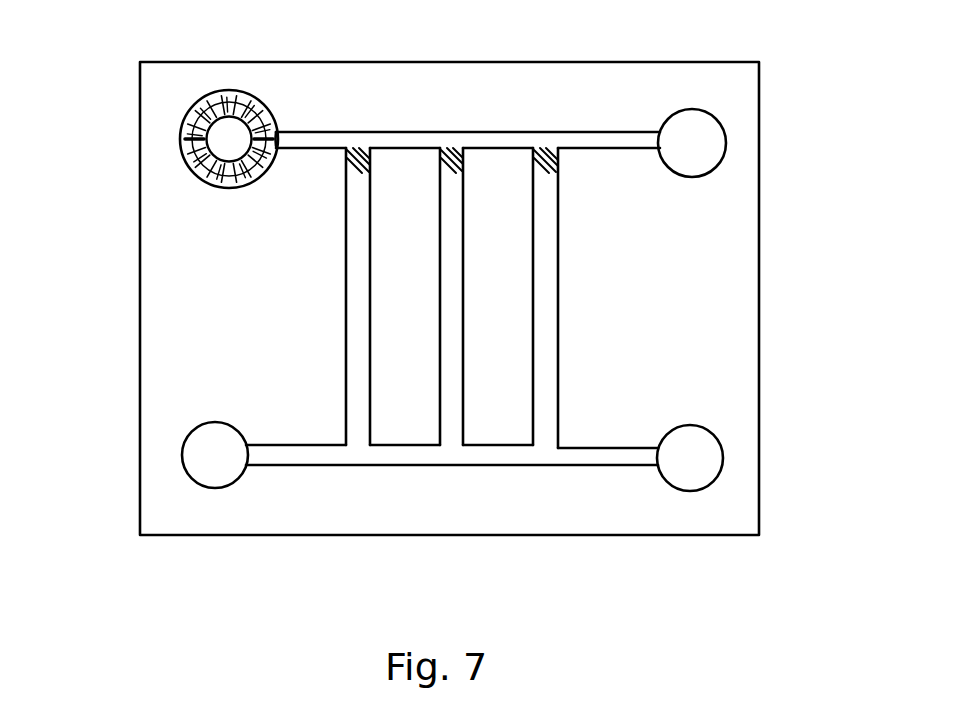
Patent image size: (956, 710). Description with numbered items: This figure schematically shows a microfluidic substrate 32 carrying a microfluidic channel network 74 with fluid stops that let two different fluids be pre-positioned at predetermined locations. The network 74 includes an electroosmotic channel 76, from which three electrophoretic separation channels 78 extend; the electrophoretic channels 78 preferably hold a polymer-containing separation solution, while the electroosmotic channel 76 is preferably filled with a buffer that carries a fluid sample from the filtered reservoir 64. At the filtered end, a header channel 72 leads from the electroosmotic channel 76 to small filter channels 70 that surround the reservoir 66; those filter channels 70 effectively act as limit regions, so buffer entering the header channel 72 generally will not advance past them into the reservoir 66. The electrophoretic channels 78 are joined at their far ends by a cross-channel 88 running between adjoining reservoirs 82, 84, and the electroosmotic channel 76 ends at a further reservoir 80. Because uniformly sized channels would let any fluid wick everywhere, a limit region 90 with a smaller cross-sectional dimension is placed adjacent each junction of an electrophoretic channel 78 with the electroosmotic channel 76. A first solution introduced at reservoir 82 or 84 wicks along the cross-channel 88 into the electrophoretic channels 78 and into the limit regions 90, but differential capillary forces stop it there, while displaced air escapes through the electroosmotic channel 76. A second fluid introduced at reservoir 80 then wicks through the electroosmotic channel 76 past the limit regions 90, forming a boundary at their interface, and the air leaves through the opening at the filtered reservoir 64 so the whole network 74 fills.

The substrate / chip body 32 is at (696, 70).
The filtered reservoir 64 is at (181, 135).
The reservoir 66 is at (230, 153).
The filter channels 70 is at (227, 93).
The header channel 72 is at (273, 108).
The microfluidic channel network 74 is at (262, 78).
The electroosmotic channel 76 is at (327, 140).
The electrophoretic separation channels 78 is at (355, 318).
The reservoir 80 is at (725, 143).
The reservoir 82 is at (182, 453).
The reservoir 84 is at (725, 458).
The cross-channel 88 is at (303, 455).
The limit region 90 is at (345, 157).